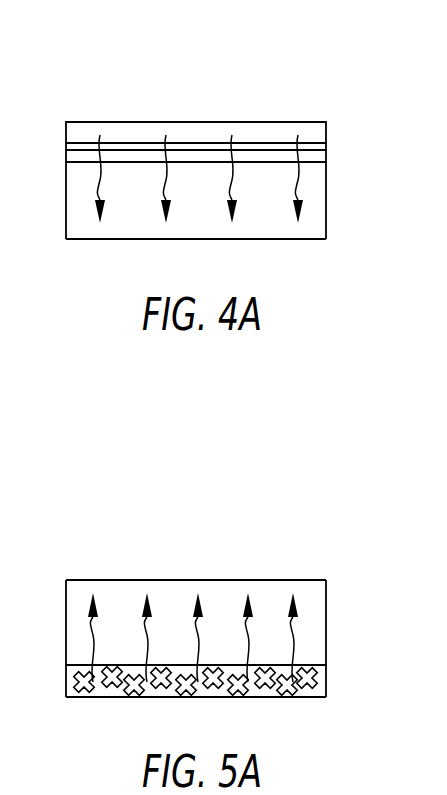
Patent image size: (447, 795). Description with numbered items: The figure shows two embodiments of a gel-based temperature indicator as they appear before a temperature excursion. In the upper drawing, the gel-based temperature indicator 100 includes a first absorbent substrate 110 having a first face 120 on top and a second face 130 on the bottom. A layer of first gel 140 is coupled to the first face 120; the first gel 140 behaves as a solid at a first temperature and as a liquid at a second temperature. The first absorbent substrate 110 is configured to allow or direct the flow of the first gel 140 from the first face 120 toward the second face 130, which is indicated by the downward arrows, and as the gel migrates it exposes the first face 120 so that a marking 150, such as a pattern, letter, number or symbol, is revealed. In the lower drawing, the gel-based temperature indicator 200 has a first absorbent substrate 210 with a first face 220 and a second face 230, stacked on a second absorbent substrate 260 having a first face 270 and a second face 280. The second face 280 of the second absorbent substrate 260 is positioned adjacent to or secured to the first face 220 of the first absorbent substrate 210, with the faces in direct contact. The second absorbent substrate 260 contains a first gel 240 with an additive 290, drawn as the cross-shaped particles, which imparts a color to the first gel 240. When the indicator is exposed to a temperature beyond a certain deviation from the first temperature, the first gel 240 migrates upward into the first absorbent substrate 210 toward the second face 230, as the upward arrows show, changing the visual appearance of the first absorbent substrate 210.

In FIG. 4A, the gel-based temperature indicator 100 is at (128, 70).
In FIG. 4A, the first absorbent substrate 110 is at (277, 217).
In FIG. 4A, the first face 120 is at (66, 150).
In FIG. 4A, the second face 130 is at (70, 240).
In FIG. 4A, the first gel 140 is at (199, 133).
In FIG. 4A, the marking 150 is at (317, 155).
In FIG. 5A, the gel-based temperature indicator 200 is at (128, 527).
In FIG. 5A, the first absorbent substrate 210 is at (327, 614).
In FIG. 5A, the first face 220 is at (115, 664).
In FIG. 5A, the second face 230 is at (204, 580).
In FIG. 5A, the first gel 240 is at (70, 677).
In FIG. 5A, the second absorbent substrate 260 is at (327, 680).
In FIG. 5A, the first face 270 is at (72, 698).
In FIG. 5A, the second face 280 is at (230, 665).
In FIG. 5A, the additive 290 is at (185, 684).